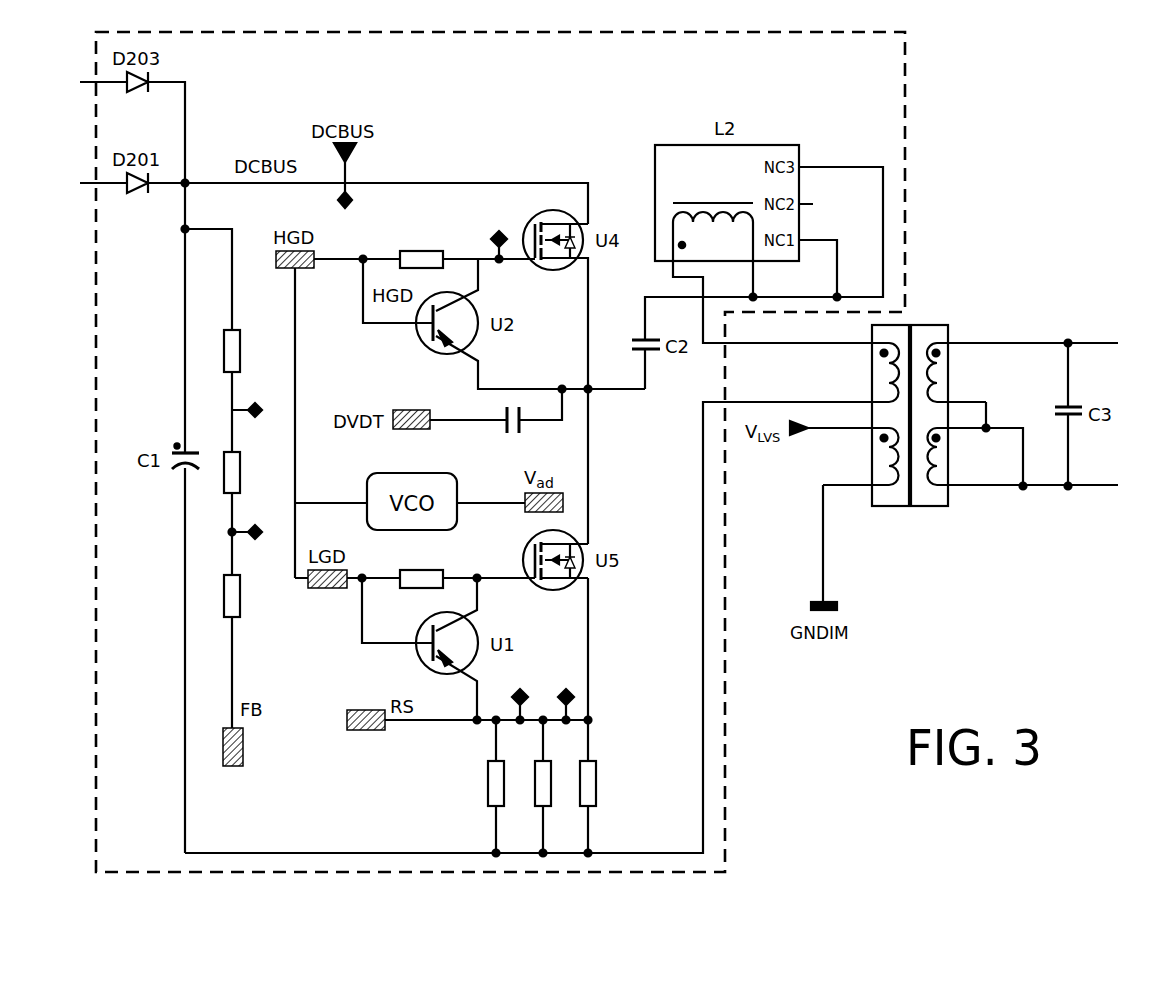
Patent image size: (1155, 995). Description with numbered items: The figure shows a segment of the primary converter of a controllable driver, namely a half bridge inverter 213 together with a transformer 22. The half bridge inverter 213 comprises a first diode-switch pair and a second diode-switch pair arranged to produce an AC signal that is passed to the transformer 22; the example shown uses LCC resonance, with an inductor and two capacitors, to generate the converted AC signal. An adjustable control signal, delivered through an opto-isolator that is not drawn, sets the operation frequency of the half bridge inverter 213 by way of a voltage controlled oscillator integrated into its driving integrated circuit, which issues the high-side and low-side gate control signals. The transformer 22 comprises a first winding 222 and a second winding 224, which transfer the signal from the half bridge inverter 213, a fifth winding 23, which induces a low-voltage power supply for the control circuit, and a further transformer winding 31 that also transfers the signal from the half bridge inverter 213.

The half bridge inverter 213 is at (95, 308).
The transformer 22 is at (931, 325).
The first winding 222 is at (882, 392).
The second winding 224 is at (945, 392).
The fifth winding 23 is at (889, 506).
The further transformer winding 31 is at (930, 460).